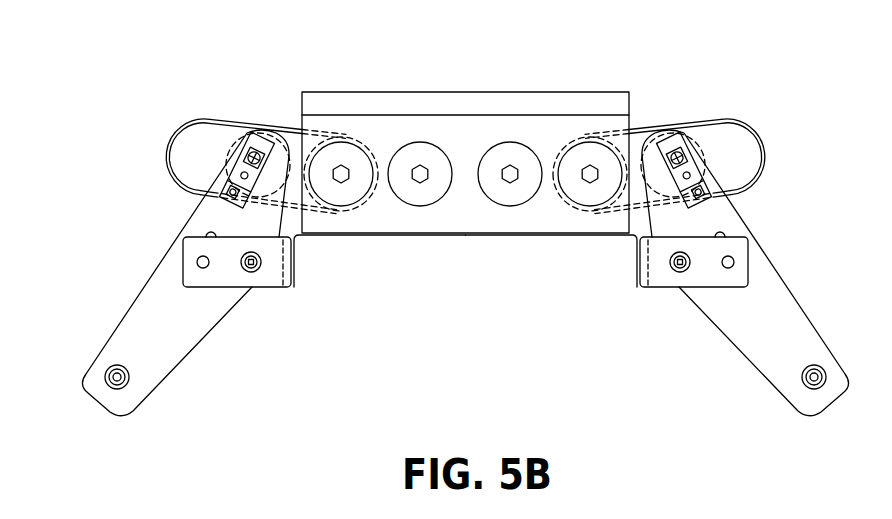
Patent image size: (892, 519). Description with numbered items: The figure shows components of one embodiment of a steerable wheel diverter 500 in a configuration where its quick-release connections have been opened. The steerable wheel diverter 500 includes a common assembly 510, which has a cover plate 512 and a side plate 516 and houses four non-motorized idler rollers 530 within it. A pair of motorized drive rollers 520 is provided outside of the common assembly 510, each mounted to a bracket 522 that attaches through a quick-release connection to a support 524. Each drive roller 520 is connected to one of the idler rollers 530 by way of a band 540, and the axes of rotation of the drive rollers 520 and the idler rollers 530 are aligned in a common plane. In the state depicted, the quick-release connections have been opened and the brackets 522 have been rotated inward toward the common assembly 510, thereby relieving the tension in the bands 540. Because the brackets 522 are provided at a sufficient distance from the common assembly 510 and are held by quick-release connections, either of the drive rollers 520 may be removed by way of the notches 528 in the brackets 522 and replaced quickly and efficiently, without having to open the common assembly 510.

The steerable wheel diverter 500 is at (447, 214).
The common assembly 510 is at (457, 214).
The cover plate 512 is at (328, 90).
The side plate 516 is at (468, 215).
The drive roller 520 is at (457, 214).
The bracket 522 is at (130, 333).
The support 524 is at (251, 273).
The notch 528 is at (720, 70).
The idler roller 530 is at (345, 158).
The band 540 is at (170, 182).